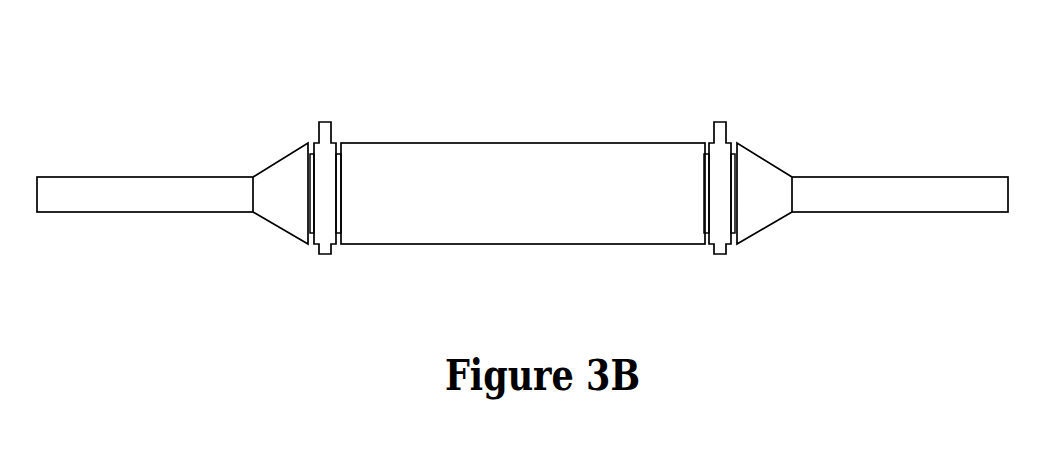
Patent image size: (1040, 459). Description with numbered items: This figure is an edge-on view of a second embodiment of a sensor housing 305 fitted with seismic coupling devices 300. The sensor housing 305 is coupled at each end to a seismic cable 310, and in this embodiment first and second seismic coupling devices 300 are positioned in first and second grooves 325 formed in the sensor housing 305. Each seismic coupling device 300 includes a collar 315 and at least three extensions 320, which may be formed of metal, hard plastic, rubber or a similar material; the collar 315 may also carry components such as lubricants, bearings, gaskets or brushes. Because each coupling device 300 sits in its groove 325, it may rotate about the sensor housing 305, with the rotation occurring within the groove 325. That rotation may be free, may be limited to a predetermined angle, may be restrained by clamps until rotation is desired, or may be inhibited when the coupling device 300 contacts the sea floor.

The seismic coupling device 300 is at (522, 163).
The sensor housing 305 is at (493, 143).
The seismic cable 310 is at (155, 177).
The collar 315 is at (340, 212).
The extensions 320 is at (318, 132).
The groove 325 is at (312, 246).